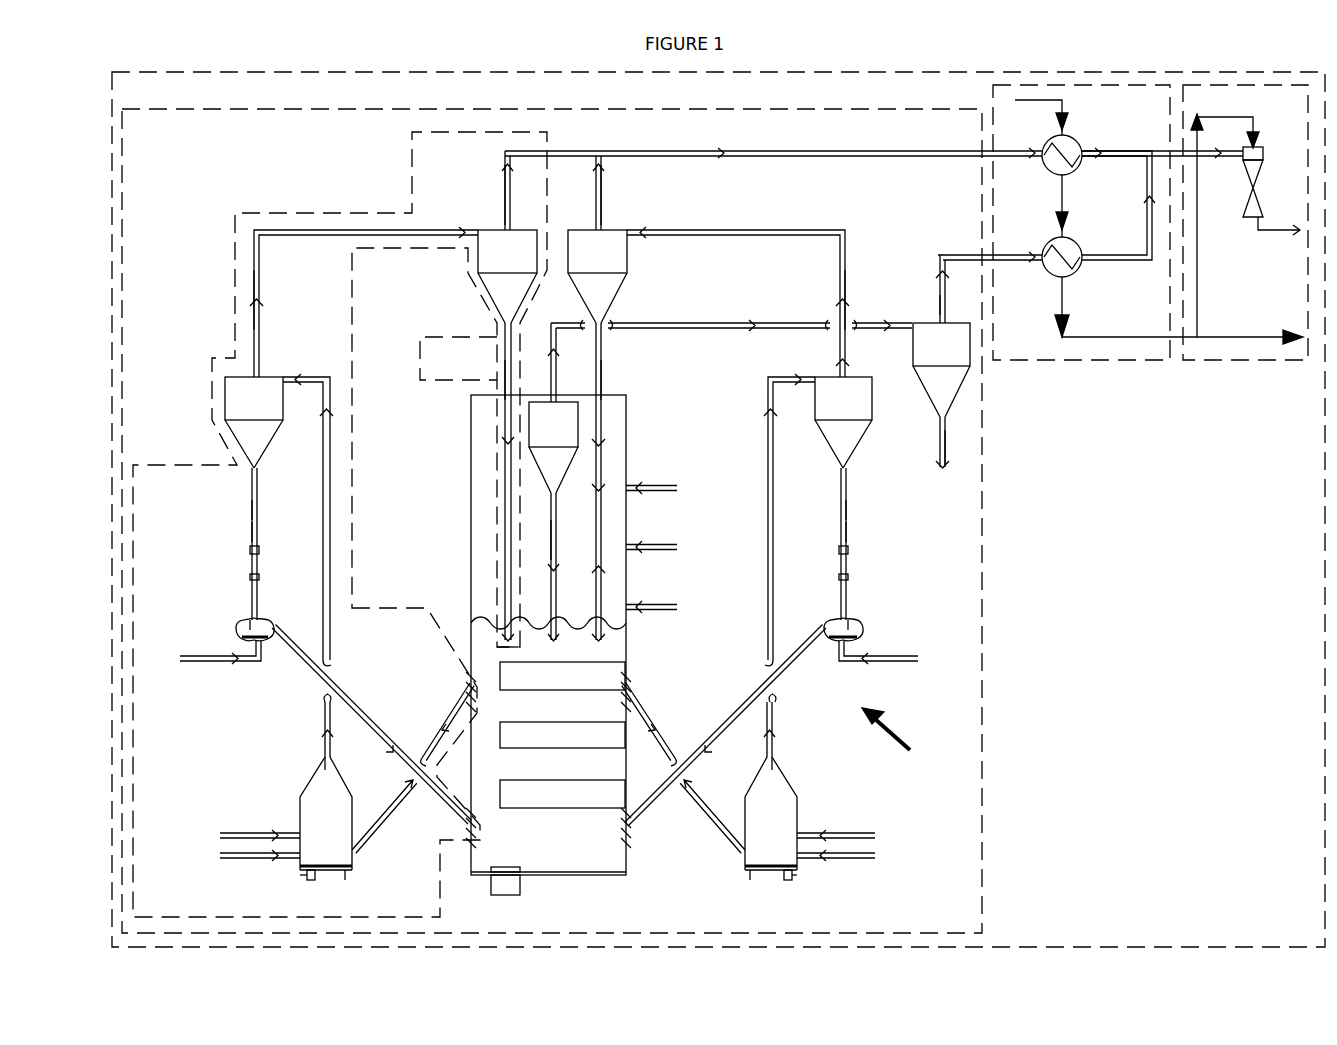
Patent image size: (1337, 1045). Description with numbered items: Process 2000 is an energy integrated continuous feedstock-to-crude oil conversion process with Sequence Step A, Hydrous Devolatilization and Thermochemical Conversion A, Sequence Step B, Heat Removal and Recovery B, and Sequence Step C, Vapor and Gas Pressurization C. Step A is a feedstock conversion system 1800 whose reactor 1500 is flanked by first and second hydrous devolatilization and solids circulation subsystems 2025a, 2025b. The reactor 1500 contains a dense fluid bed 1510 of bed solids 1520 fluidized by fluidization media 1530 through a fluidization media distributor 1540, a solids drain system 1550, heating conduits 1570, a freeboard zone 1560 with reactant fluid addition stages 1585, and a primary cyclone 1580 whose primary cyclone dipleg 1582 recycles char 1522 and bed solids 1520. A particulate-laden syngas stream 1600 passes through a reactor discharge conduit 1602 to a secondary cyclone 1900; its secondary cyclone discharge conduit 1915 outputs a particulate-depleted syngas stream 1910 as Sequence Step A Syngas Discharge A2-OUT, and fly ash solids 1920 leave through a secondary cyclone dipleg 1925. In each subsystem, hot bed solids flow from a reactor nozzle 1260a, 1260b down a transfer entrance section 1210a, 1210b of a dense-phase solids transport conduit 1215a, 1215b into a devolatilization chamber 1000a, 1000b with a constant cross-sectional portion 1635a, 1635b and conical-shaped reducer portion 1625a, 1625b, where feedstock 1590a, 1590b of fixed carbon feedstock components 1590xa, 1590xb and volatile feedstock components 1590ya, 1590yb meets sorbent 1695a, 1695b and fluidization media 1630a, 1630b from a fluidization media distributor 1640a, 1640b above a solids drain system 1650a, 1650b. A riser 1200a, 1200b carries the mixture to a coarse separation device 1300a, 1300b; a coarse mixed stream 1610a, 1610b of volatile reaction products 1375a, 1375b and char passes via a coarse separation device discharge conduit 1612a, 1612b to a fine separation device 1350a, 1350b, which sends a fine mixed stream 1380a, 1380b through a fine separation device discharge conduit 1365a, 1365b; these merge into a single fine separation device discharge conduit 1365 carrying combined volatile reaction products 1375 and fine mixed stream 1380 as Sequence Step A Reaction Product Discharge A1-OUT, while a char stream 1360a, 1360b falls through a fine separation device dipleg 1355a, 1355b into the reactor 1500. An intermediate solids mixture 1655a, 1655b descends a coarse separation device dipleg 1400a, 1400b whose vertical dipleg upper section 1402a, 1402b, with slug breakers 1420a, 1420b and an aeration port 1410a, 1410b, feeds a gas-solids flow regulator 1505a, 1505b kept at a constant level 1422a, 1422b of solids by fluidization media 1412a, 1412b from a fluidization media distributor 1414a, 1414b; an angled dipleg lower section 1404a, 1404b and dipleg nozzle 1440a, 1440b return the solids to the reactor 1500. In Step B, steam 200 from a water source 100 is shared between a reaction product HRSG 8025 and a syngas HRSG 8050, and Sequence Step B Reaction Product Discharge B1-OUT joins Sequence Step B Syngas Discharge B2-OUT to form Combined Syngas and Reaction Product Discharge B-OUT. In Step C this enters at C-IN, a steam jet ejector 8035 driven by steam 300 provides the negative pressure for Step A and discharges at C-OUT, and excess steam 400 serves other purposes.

The feedstock conversion system 1800 is at (985, 812).
The energy integrated continuous feedstock-to-crude oil conversion process 2000 is at (1302, 810).
The Sequence Step A, Hydrous Devolatilization and Thermochemical Conversion A is at (985, 850).
The Sequence Step B, Heat Removal and Recovery B is at (1085, 360).
The Sequence Step C, Vapor and Gas Pressurization C is at (1250, 360).
The first hydrous devolatilization and solids circulation subsystem 2025a is at (233, 266).
The second hydrous devolatilization and solids circulation subsystem 2025b is at (915, 742).
The single fine separation device discharge conduit 1365 is at (751, 160).
The volatile reaction products 1375 is at (806, 160).
The fine mixed stream 1380 is at (861, 160).
The fine mixed stream 1380a is at (503, 174).
The volatile reaction products 1375a is at (503, 192).
The fine separation device discharge conduit 1365a is at (503, 210).
The fine mixed stream 1380b is at (603, 174).
The volatile reaction products 1375b is at (603, 192).
The fine separation device discharge conduit 1365b is at (603, 210).
The Sequence Step A Reaction Product Discharge A1-OUT is at (946, 160).
The Sequence Step A Syngas Discharge A2-OUT is at (956, 254).
The reaction product heat recovery steam generator 8025 is at (1075, 170).
The syngas heat recovery steam generator 8050 is at (1048, 248).
The water source 100 is at (1048, 100).
The steam 200 is at (1062, 196).
The excess steam 400 is at (1245, 324).
The Sequence Step B Reaction Product Discharge B1-OUT is at (1120, 140).
The Sequence Step B Combined Syngas and Reaction Product Discharge B-OUT is at (1150, 150).
The Sequence Step B Syngas Discharge B2-OUT is at (1100, 262).
The steam 300 is at (1246, 112).
The steam jet ejector 8035 is at (1247, 218).
The expander input C-IN is at (1235, 160).
The expander output C-OUT is at (1285, 240).
The fine separation device 1350a is at (507, 276).
The fine separation device 1350b is at (597, 276).
The coarse separation device discharge conduit 1612a is at (261, 256).
The coarse mixed stream 1610a is at (261, 275).
The coarse separation device discharge conduit 1612b is at (838, 253).
The coarse mixed stream 1610b is at (838, 273).
The fine separation device dipleg 1355a is at (503, 351).
The char stream 1360a is at (503, 371).
The fine separation device dipleg 1355b is at (603, 351).
The char stream 1360b is at (603, 371).
The particulate-laden syngas stream 1600 is at (660, 322).
The reactor discharge conduit 1602 is at (717, 322).
The secondary cyclone 1900 is at (941, 395).
The particulate-depleted syngas stream 1910 is at (938, 282).
The secondary cyclone discharge conduit 1915 is at (938, 301).
The fly ash solids 1920 is at (938, 439).
The secondary cyclone dipleg 1925 is at (938, 459).
The coarse separation device 1300a is at (254, 422).
The coarse separation device 1300b is at (843, 422).
The riser 1200a is at (333, 630).
The riser 1200b is at (765, 630).
The coarse separation device dipleg 1400a is at (250, 490).
The vertical dipleg upper section 1402a is at (250, 511).
The intermediate solids mixture 1655a is at (250, 532).
The slug breakers 1420a is at (248, 553).
The aeration port 1410a is at (248, 575).
The gas-solids flow regulator 1505a is at (240, 620).
The constant level 1422a is at (236, 621).
The fluidization media distributor 1414a is at (240, 640).
The fluidization media 1412a is at (215, 662).
The angled dipleg lower section 1404a is at (294, 704).
The coarse separation device dipleg 1400b is at (849, 490).
The vertical dipleg upper section 1402b is at (849, 511).
The intermediate solids mixture 1655b is at (849, 532).
The slug breakers 1420b is at (850, 553).
The aeration port 1410b is at (850, 575).
The gas-solids flow regulator 1505b is at (856, 620).
The constant level 1422b is at (863, 621).
The fluidization media distributor 1414b is at (859, 640).
The fluidization media 1412b is at (885, 662).
The angled dipleg lower section 1404b is at (804, 702).
The reactor 1500 is at (471, 438).
The freeboard zone 1560 is at (486, 463).
The primary cyclone 1580 is at (553, 447).
The primary cyclone dipleg 1582 is at (559, 508).
The char 1522 is at (559, 528).
The bed solids 1520 is at (559, 547).
The reactant fluid addition stages 1585 is at (640, 486).
The heating conduits 1570 is at (562, 735).
The dense fluid bed 1510 is at (551, 706).
The solids drain system 1550 is at (495, 895).
The fluidization media 1530 is at (549, 878).
The fluidization media distributor 1540 is at (603, 878).
The reactor nozzle 1260a is at (460, 680).
The transfer entrance section 1210a is at (450, 715).
The dense-phase solids transport conduit 1215a is at (432, 740).
The dipleg nozzle 1440a is at (462, 826).
The reactor nozzle 1260b is at (634, 690).
The transfer entrance section 1210b is at (648, 715).
The dense-phase solids transport conduit 1215b is at (664, 740).
The dipleg nozzle 1440b is at (635, 826).
The devolatilization chamber 1000a is at (302, 795).
The conical-shaped reducer portion 1625a is at (316, 770).
The constant cross-sectional portion 1635a is at (357, 865).
The fluidization media 1630a is at (312, 882).
The fluidization media distributor 1640a is at (348, 882).
The solids drain system 1650a is at (302, 879).
The first feedstock 1590a is at (217, 836).
The fixed carbon feedstock components 1590xa is at (218, 832).
The volatile feedstock components 1590ya is at (283, 832).
The sorbent 1695a is at (220, 860).
The devolatilization chamber 1000b is at (796, 795).
The conical-shaped reducer portion 1625b is at (782, 770).
The constant cross-sectional portion 1635b is at (740, 865).
The fluidization media 1630b is at (773, 882).
The fluidization media distributor 1640b is at (748, 882).
The solids drain system 1650b is at (797, 879).
The second feedstock 1590b is at (880, 836).
The volatile feedstock components 1590yb is at (838, 814).
The fixed carbon feedstock components 1590xb is at (880, 832).
The sorbent 1695b is at (878, 860).